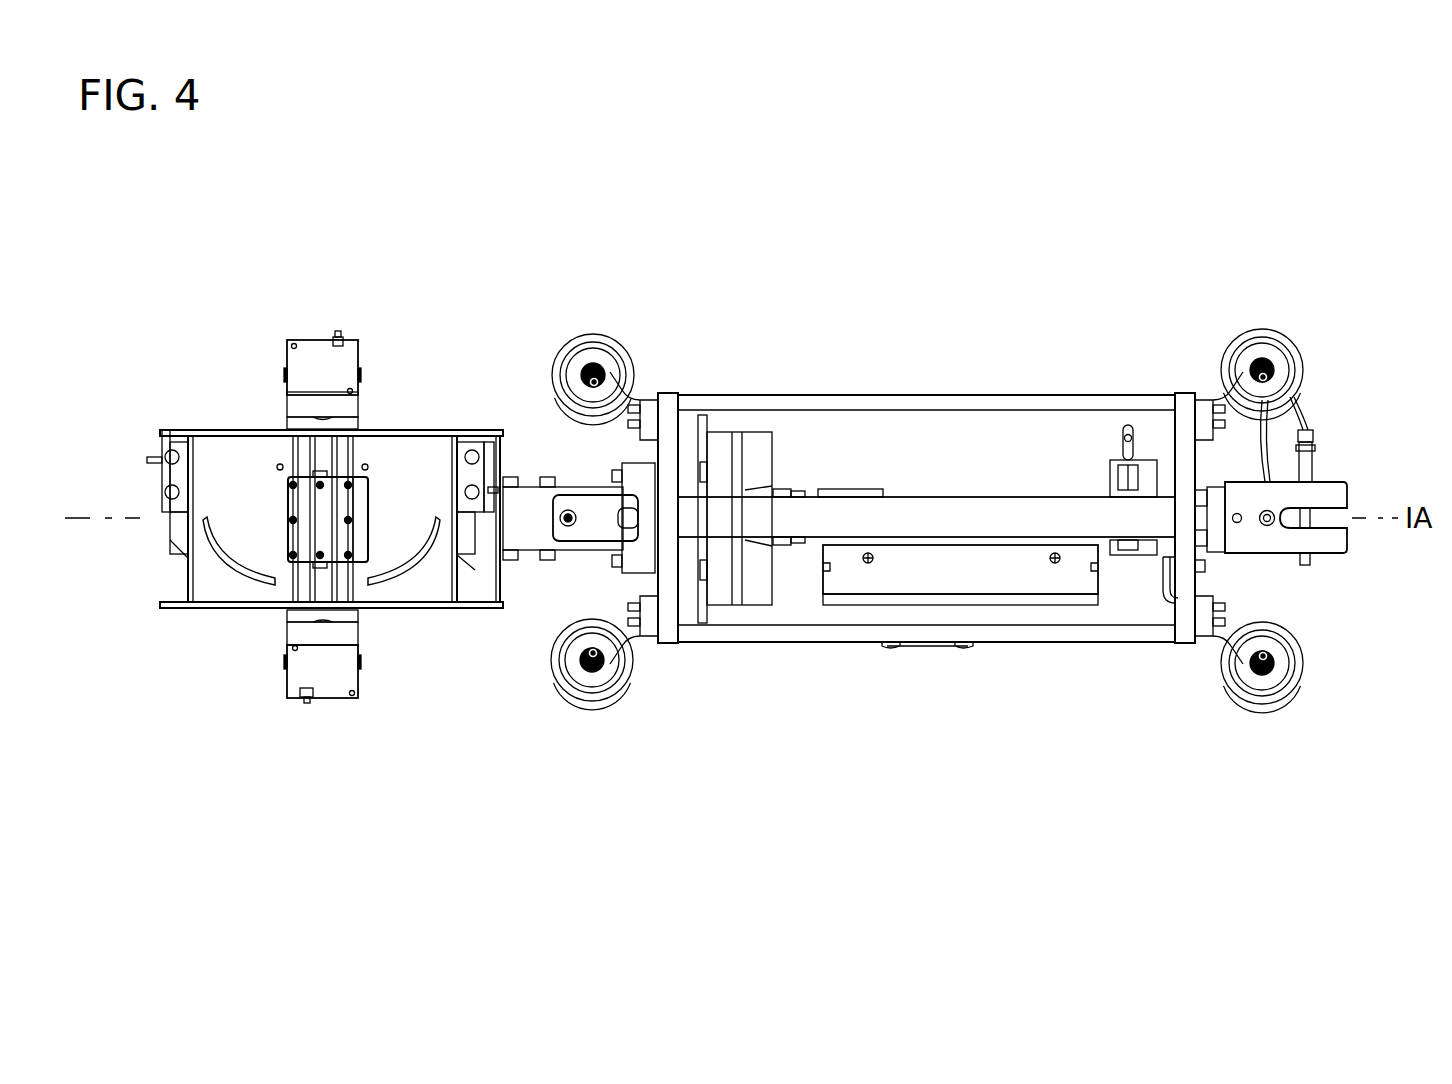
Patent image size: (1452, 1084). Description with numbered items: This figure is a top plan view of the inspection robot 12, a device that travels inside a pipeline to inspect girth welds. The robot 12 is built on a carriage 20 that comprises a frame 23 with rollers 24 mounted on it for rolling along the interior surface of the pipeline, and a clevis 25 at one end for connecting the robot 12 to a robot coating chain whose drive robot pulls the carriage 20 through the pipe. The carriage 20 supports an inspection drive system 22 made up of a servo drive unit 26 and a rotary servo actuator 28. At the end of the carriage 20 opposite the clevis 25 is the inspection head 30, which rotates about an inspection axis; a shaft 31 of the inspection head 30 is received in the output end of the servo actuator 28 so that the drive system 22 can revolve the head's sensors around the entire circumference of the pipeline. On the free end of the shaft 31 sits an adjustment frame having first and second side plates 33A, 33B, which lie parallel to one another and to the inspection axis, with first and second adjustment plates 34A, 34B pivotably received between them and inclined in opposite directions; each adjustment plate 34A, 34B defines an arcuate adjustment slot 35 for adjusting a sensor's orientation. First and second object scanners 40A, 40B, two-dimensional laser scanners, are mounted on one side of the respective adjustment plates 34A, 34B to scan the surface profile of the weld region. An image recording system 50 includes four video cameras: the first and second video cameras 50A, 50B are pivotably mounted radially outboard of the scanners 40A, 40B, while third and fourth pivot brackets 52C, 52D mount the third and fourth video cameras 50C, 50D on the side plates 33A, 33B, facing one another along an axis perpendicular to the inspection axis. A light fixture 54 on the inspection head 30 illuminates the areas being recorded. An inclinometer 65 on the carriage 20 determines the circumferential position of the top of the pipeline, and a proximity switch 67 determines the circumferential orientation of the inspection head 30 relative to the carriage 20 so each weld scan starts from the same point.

The inspection robot 12 is at (846, 812).
The carriage 20 is at (1076, 645).
The inspection drive system 22 is at (988, 605).
The frame 23 is at (798, 632).
The rollers 24 is at (605, 672).
The clevis 25 is at (1262, 542).
The servo drive unit 26 is at (955, 582).
The rotary servo actuator 28 is at (718, 432).
The inspection head 30 is at (408, 358).
The shaft 31 is at (527, 538).
The first side plate 33A is at (208, 608).
The second side plate 33B is at (253, 432).
The first adjustment plate 34A is at (428, 450).
The second adjustment plate 34B is at (222, 450).
The arcuate adjustment slot 35 is at (222, 540).
The first object scanner 40A is at (475, 548).
The second object scanner 40B is at (175, 538).
The image recording system 50 is at (362, 330).
The first video camera 50A is at (490, 460).
The second video camera 50B is at (162, 446).
The third video camera 50C is at (330, 688).
The fourth video camera 50D is at (315, 357).
The third pivot bracket 52C is at (358, 618).
The fourth pivot bracket 52D is at (358, 420).
The light fixture 54 is at (340, 532).
The inclinometer 65 is at (1128, 426).
The proximity switch 67 is at (568, 528).